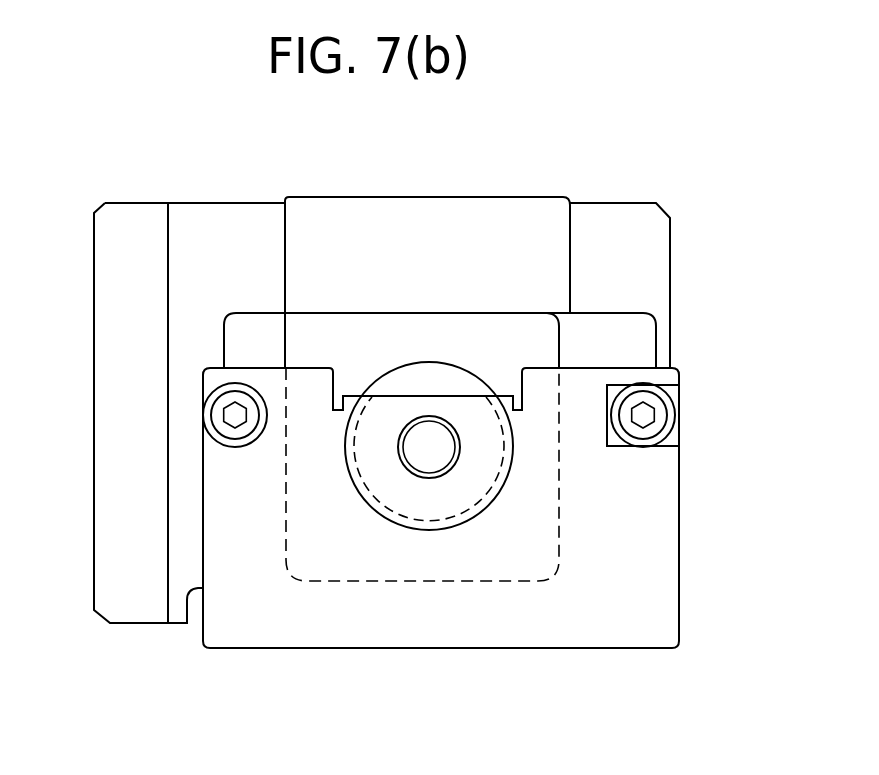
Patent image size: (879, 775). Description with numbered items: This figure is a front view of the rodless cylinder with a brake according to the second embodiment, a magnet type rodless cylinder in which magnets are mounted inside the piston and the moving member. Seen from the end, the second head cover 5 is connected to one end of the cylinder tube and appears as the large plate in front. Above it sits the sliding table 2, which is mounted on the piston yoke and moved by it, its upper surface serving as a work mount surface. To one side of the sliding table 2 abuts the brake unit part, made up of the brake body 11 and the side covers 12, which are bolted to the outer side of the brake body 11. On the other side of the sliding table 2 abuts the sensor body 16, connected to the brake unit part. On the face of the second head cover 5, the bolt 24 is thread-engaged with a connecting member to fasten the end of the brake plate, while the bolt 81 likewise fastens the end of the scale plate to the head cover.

The sliding table 2 is at (519, 228).
The second head cover 5 is at (550, 625).
The brake body 11 is at (221, 220).
The side cover 12 is at (127, 313).
The sensor body 16 is at (657, 240).
The bolt 24 is at (235, 437).
The bolt 81 is at (643, 437).